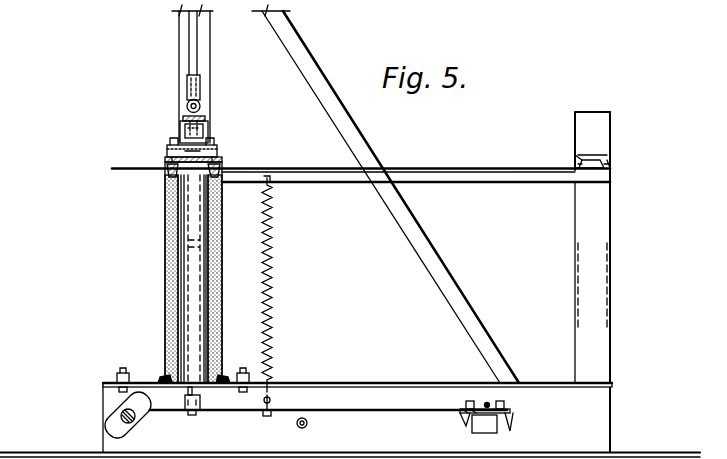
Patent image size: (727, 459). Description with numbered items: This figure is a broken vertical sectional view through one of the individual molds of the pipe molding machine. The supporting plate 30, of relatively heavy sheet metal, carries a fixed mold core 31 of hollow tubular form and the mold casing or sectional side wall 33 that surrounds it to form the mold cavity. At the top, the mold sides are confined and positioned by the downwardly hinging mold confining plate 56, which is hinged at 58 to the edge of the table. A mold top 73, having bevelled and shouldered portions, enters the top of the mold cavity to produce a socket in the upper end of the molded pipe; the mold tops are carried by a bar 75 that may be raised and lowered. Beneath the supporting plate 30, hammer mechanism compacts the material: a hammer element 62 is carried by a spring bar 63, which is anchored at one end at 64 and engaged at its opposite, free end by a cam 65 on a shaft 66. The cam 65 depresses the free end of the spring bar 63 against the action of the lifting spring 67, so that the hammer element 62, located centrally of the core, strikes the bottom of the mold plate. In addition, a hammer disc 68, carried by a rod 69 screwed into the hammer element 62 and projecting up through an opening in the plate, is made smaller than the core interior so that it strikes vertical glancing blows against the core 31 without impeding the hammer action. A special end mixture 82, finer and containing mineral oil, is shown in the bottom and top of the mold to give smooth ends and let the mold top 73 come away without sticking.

The supporting plate 30 is at (229, 383).
The mold core 31 is at (221, 301).
The mold casing 33 is at (165, 313).
The mold confining plate 56 is at (134, 170).
The hinge 58 is at (248, 168).
The hammer element 62 is at (201, 402).
The spring bar 63 is at (364, 412).
The anchorage 64 is at (462, 408).
The cam 65 is at (108, 430).
The shaft 66 is at (137, 424).
The lifting spring 67 is at (271, 243).
The hammer disc 68 is at (172, 259).
The rod 69 is at (187, 393).
The mold top 73 is at (217, 152).
The bar 75 is at (183, 118).
The special end mixture 82 is at (219, 184).